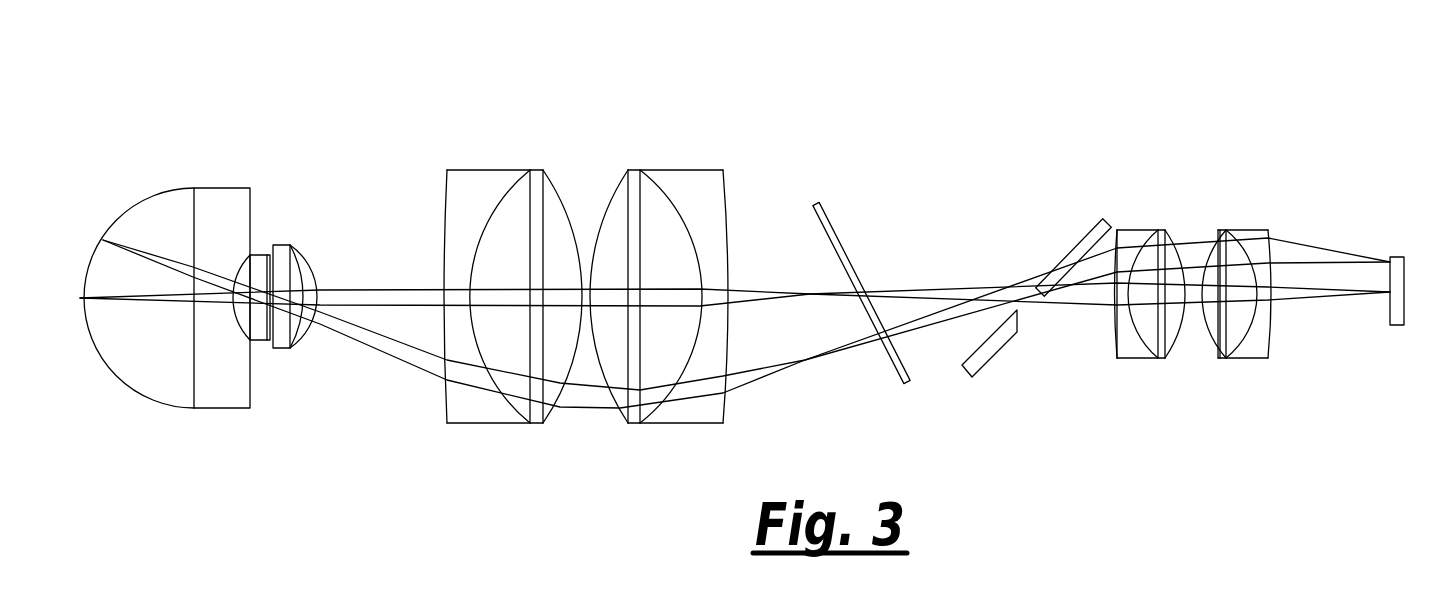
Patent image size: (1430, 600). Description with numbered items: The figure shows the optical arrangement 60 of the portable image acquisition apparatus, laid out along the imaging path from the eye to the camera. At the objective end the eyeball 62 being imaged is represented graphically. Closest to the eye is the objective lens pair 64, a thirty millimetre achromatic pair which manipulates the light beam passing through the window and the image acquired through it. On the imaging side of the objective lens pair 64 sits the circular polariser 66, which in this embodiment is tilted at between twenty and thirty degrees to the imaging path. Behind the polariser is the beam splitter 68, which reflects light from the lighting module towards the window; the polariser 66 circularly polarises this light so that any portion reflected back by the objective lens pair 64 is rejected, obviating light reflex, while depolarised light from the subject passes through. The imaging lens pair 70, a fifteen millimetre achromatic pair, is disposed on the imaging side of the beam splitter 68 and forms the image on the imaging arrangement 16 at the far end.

The imaging arrangement 16 is at (1395, 307).
The optical arrangement 60 is at (928, 131).
The eyeball 62 is at (223, 232).
The objective lens pair 64 is at (583, 142).
The circular polariser 66 is at (843, 253).
The beam splitter 68 is at (1085, 247).
The imaging lens pair 70 is at (1188, 212).